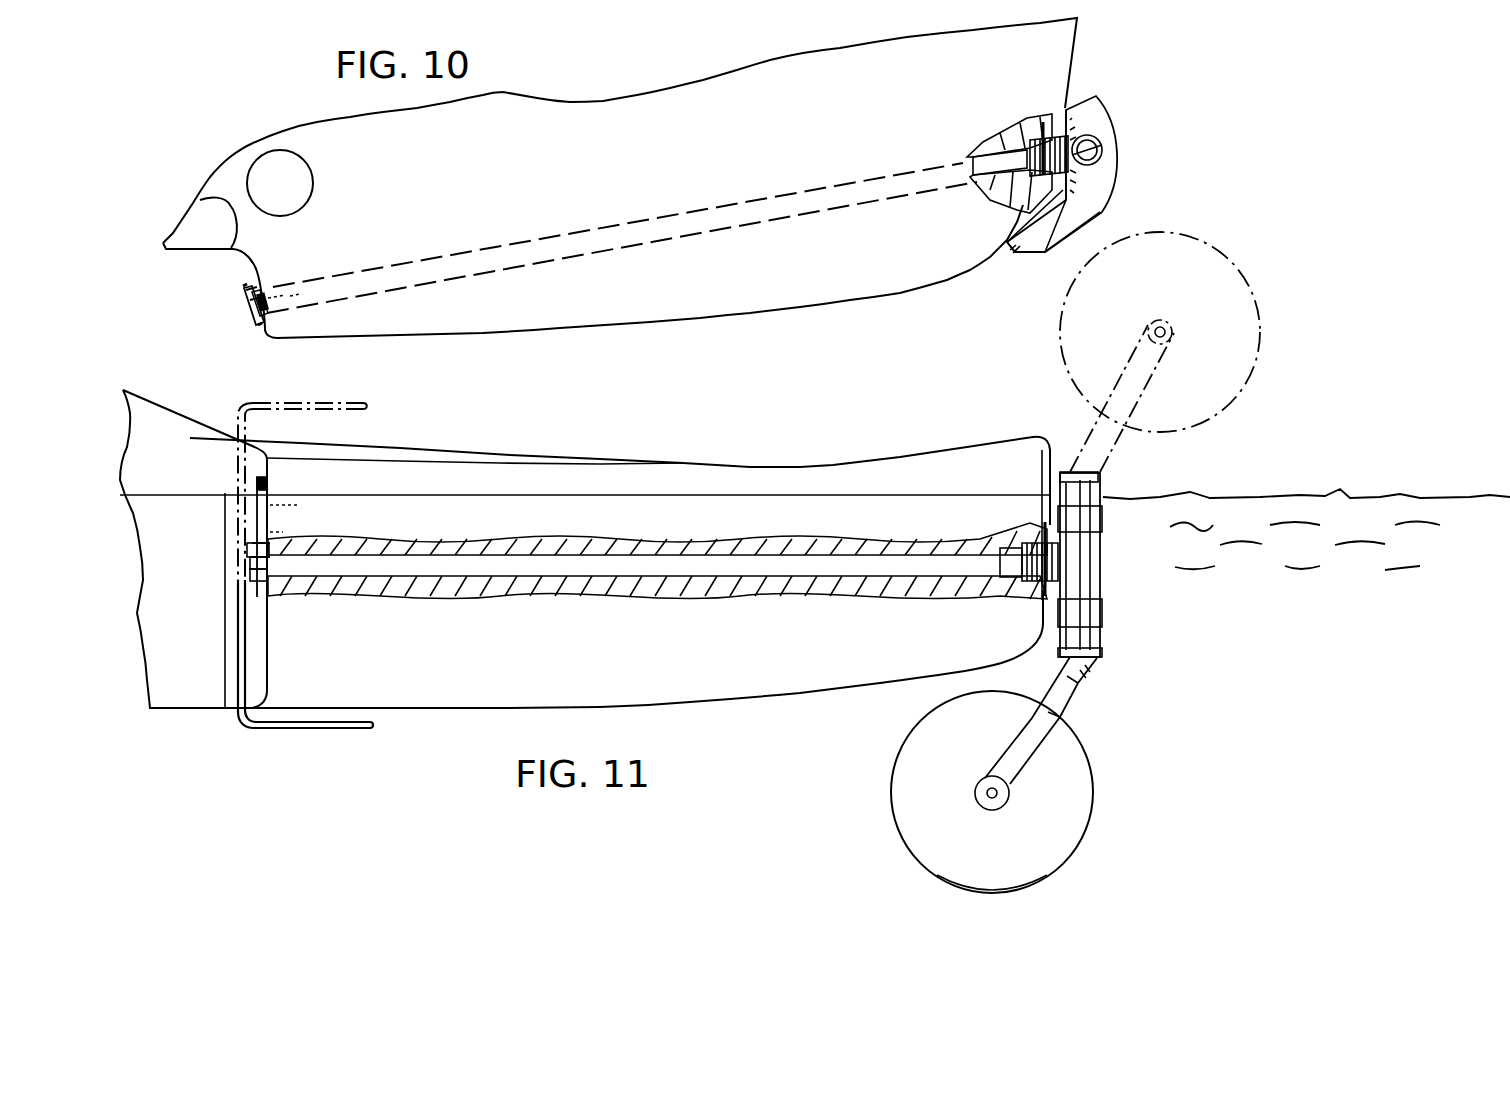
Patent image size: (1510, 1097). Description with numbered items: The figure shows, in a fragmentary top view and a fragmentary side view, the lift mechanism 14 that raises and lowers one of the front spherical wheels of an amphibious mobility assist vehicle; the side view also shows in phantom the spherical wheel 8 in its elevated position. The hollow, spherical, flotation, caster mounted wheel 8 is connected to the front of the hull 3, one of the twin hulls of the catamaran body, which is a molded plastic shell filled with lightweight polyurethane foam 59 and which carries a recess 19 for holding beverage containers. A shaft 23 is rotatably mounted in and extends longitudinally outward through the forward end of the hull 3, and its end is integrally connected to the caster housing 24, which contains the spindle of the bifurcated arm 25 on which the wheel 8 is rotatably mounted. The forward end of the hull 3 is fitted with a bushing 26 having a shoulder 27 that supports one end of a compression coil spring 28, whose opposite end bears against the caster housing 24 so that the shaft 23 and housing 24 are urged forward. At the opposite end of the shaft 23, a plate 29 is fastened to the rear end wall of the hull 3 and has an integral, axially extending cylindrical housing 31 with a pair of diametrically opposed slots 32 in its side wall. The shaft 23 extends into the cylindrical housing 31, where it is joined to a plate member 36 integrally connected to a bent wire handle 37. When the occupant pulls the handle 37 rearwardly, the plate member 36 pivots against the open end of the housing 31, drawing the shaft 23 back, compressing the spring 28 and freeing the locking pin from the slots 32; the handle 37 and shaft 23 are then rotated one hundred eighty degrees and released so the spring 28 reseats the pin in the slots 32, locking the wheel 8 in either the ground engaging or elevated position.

In FIG. 10, the hull 3 is at (706, 300).
In FIG. 11, the hull 3 is at (770, 685).
In FIG. 10, the spherical wheel 8 is at (1098, 118).
In FIG. 11, the spherical wheel 8 is at (1070, 778).
In FIG. 10, the lift mechanism 14 is at (241, 316).
In FIG. 11, the lift mechanism 14 is at (230, 650).
In FIG. 10, the recess 19 is at (300, 178).
In FIG. 10, the shaft 23 is at (980, 195).
In FIG. 11, the shaft 23 is at (775, 565).
In FIG. 10, the caster housing 24 is at (1110, 150).
In FIG. 11, the caster housing 24 is at (1101, 495).
In FIG. 10, the bifurcated arm 25 is at (1092, 187).
In FIG. 11, the bifurcated arm 25 is at (1076, 688).
In FIG. 10, the bushing 26 is at (1043, 118).
In FIG. 11, the bushing 26 is at (1040, 520).
In FIG. 10, the shoulder 27 is at (1015, 135).
In FIG. 11, the shoulder 27 is at (1000, 546).
In FIG. 10, the compression coil spring 28 is at (1104, 146).
In FIG. 11, the compression coil spring 28 is at (1062, 560).
In FIG. 10, the plate 29 is at (264, 294).
In FIG. 11, the plate 29 is at (270, 498).
In FIG. 10, the cylindrical housing 31 is at (251, 283).
In FIG. 11, the cylindrical housing 31 is at (263, 594).
In FIG. 11, the slots 32 is at (272, 568).
In FIG. 10, the plate member 36 is at (244, 303).
In FIG. 11, the plate member 36 is at (248, 562).
In FIG. 11, the bent wire handle 37 is at (330, 412).
In FIG. 10, the polyurethane foam 59 is at (990, 147).
In FIG. 11, the polyurethane foam 59 is at (622, 594).